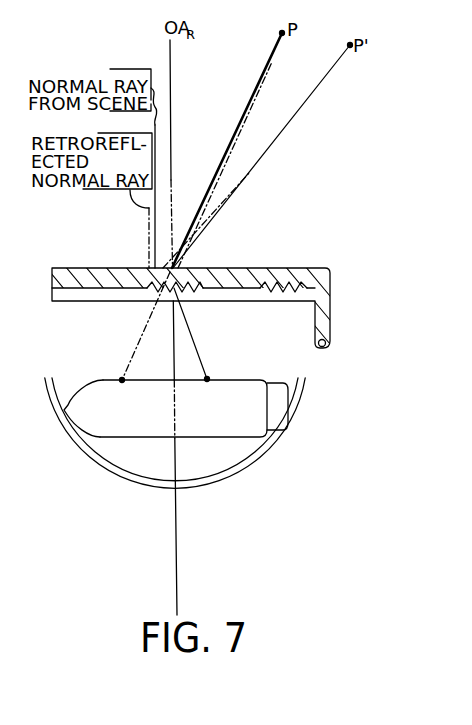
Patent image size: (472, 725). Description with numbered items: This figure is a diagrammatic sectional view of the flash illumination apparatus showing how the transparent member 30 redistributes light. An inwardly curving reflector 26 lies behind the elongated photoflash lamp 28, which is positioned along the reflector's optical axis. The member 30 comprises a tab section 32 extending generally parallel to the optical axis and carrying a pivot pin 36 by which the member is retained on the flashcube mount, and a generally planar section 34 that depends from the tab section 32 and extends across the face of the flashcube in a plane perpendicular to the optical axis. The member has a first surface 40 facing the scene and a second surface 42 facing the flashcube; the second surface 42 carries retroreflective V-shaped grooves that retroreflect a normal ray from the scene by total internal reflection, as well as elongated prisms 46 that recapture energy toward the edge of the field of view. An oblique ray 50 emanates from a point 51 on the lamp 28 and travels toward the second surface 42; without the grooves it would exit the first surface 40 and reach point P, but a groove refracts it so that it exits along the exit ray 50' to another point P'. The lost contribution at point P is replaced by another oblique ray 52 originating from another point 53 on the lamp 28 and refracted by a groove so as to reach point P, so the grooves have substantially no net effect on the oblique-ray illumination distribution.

The inwardly curving reflector 26 is at (252, 462).
The photoflash lamp 28 is at (218, 380).
The transparent member 30 is at (187, 298).
The tab section 32 is at (330, 317).
The planar section 34 is at (52, 282).
The pivot pin 36 is at (322, 350).
The first surface 40 is at (257, 268).
The second surface 42 is at (227, 290).
The elongated prism 46 is at (286, 291).
The oblique ray 50 is at (196, 206).
The exit ray 50' is at (261, 156).
The point on photoflash lamp 51 is at (122, 380).
The oblique ray 52 is at (212, 212).
The point on photoflash lamp 53 is at (207, 379).